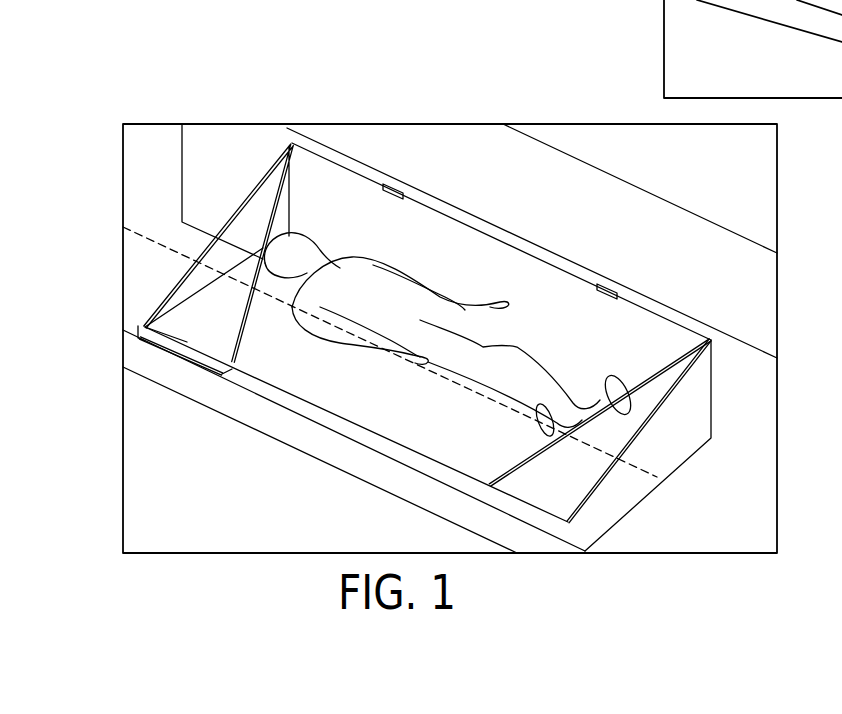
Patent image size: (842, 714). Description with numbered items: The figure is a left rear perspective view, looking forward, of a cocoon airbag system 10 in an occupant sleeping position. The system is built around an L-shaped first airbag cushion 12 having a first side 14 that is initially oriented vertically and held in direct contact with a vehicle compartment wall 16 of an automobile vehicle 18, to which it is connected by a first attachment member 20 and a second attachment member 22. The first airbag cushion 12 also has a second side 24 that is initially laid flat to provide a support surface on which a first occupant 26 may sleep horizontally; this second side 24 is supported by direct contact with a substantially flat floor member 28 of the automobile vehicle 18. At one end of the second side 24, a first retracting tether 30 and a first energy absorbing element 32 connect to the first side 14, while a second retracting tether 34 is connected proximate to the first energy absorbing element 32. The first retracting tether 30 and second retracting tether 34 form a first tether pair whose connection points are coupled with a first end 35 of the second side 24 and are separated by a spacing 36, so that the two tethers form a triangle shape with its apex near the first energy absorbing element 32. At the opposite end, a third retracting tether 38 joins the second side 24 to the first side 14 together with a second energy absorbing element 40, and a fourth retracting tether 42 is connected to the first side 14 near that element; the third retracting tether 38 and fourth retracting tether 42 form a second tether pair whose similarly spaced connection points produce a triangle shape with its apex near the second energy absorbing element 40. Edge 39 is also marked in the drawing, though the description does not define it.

The cocoon airbag system 10 is at (513, 100).
The first airbag cushion 12 is at (562, 268).
The first side 14 is at (621, 317).
The vehicle compartment wall 16 is at (763, 372).
The automobile vehicle 18 is at (748, 292).
The first attachment member 20 is at (393, 185).
The second attachment member 22 is at (606, 284).
The second side 24 is at (672, 445).
The first occupant 26 is at (370, 318).
The floor member 28 is at (620, 513).
The first retracting tether 30 is at (193, 262).
The first energy absorbing element 32 is at (312, 153).
The second retracting tether 34 is at (243, 357).
The first end 35 is at (187, 342).
The spacing 36 is at (168, 352).
The third retracting tether 38 is at (585, 497).
The base edge 39 is at (542, 510).
The second energy absorbing element 40 is at (669, 360).
The fourth retracting tether 42 is at (512, 480).